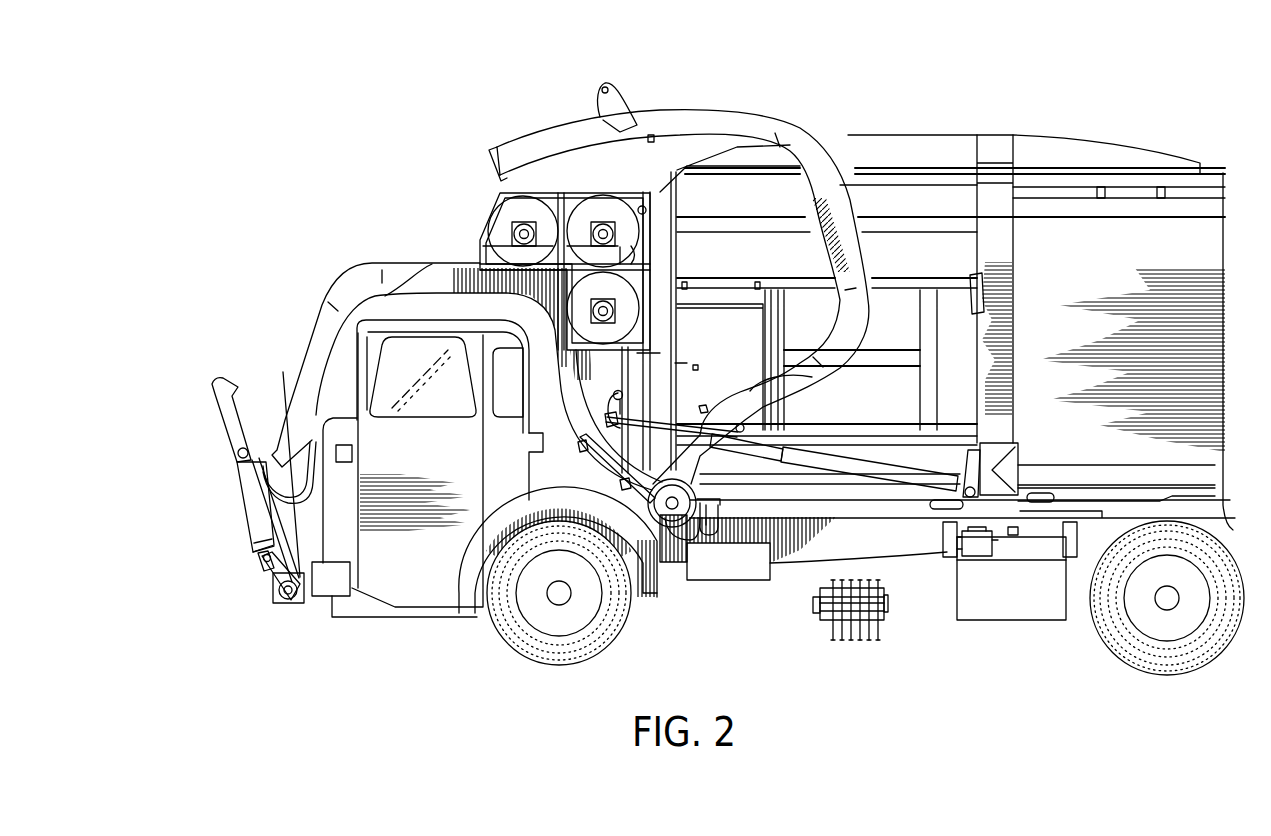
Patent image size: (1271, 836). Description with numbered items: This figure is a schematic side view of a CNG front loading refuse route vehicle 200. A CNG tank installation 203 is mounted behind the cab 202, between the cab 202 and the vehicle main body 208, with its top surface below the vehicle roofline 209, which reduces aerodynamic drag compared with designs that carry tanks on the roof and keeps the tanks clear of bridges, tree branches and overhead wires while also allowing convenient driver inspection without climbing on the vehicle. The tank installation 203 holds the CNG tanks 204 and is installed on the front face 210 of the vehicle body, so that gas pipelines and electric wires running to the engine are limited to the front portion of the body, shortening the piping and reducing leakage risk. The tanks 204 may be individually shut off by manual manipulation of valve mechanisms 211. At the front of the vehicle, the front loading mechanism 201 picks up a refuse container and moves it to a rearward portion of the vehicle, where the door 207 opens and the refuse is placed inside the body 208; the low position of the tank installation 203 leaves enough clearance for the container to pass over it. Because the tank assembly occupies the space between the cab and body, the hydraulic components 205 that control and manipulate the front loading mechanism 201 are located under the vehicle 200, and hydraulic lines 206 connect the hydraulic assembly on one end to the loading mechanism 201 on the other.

The vehicle 200 is at (897, 97).
The front loading mechanism 201 is at (270, 583).
The cab 202 is at (425, 590).
The CNG tank installation 203 is at (484, 216).
The CNG tanks 204 is at (530, 210).
The hydraulic components 205 is at (818, 618).
The hydraulic lines 206 is at (680, 550).
The door 207 is at (856, 140).
The vehicle main body 208 is at (965, 190).
The vehicle roofline 209 is at (993, 135).
The front face 210 is at (645, 413).
The valve mechanisms 211 is at (507, 237).